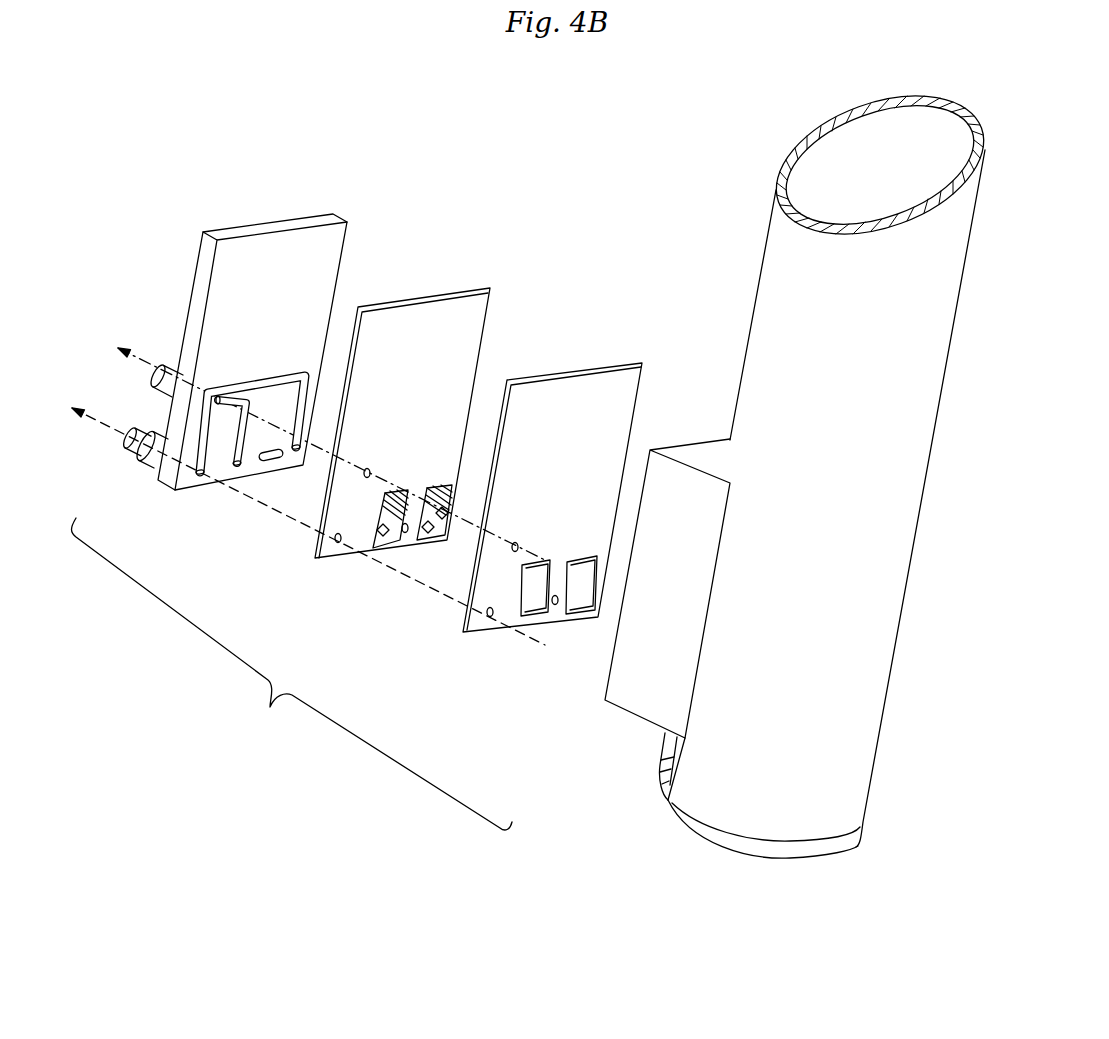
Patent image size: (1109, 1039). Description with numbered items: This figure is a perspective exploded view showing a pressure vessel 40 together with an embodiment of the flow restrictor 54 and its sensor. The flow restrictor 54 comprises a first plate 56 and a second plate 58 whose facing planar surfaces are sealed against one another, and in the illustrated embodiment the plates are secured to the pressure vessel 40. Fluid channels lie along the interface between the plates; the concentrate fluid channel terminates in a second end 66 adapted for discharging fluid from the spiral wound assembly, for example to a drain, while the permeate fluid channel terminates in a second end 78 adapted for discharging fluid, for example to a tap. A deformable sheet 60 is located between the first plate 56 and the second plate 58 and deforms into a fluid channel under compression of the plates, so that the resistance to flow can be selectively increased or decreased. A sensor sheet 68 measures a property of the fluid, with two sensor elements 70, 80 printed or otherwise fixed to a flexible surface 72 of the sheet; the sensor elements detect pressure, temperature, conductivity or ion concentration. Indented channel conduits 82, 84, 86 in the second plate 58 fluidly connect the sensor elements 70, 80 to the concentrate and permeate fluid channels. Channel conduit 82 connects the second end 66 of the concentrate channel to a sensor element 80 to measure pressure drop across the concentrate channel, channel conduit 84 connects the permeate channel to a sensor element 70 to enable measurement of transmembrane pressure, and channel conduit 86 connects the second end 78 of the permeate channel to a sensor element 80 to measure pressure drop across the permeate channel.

The pressure vessel 40 is at (702, 782).
The flow restrictor 54 is at (292, 674).
The first plate 56 is at (635, 702).
The second plate 58 is at (330, 242).
The deformable sheet 60 is at (580, 370).
The second end of the concentrate fluid channel 66 is at (135, 428).
The sensor sheet 68 is at (466, 285).
The sensor element 70 is at (427, 540).
The surface of the sensor sheet 72 is at (463, 330).
The second end of the permeate fluid channel 78 is at (170, 363).
The sensor element 80 is at (378, 528).
The channel conduit 82 is at (283, 370).
The channel conduit 84 is at (277, 462).
The channel conduit 86 is at (233, 460).